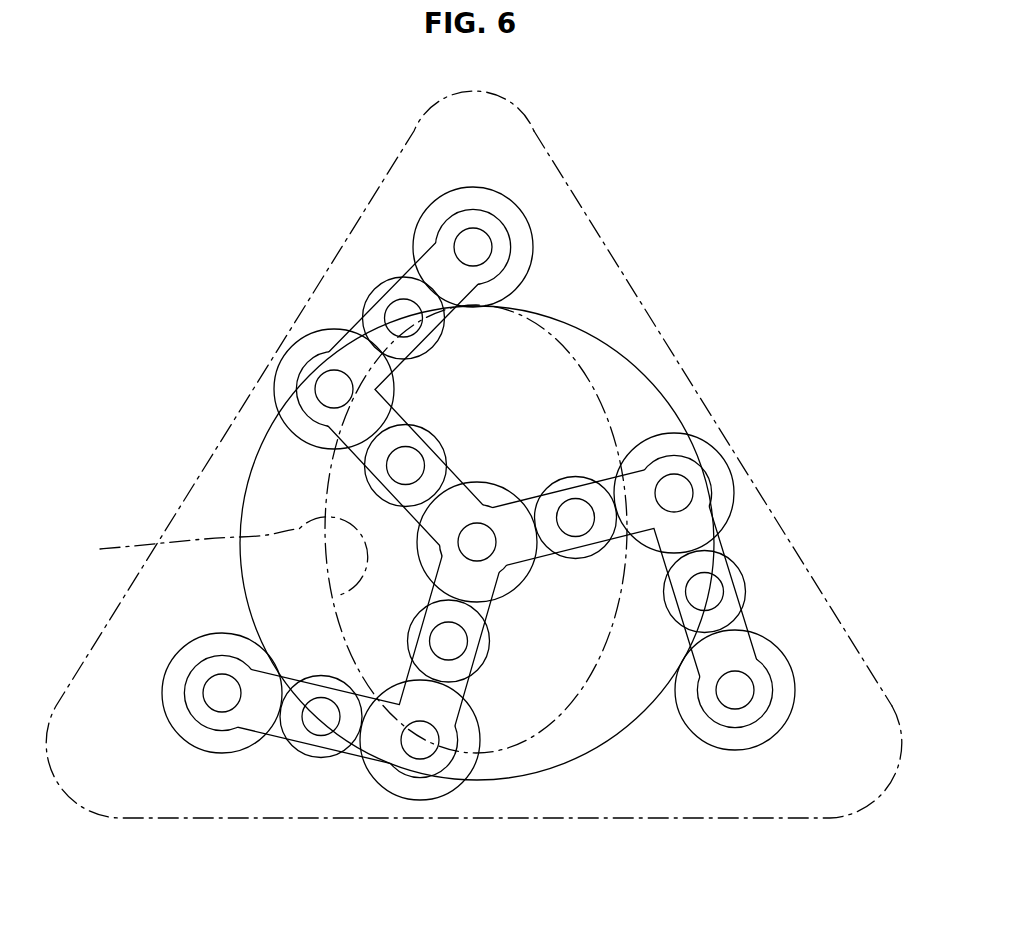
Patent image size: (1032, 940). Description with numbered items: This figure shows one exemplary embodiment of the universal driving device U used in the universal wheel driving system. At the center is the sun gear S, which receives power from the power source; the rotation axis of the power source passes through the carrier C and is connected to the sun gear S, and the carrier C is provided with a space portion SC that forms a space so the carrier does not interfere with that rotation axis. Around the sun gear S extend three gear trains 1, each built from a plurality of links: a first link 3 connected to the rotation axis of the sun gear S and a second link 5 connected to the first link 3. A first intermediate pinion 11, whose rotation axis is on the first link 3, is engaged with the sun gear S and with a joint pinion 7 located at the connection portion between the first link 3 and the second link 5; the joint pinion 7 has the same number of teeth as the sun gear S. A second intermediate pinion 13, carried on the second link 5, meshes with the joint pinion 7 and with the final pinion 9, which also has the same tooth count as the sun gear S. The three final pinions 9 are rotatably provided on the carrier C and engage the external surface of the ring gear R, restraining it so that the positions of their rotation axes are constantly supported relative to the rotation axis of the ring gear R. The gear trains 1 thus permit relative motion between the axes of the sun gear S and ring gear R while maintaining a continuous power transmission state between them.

The gear train 1 is at (778, 587).
The first link 3 is at (358, 434).
The second link 5 is at (434, 240).
The joint pinion 7 is at (281, 384).
The final pinion 9 is at (456, 197).
The first intermediate pinion 11 is at (435, 438).
The second intermediate pinion 13 is at (374, 294).
The universal driving device U is at (614, 185).
The ring gear R is at (572, 324).
The sun gear S is at (514, 582).
The carrier C is at (752, 473).
The space portion SC is at (209, 556).